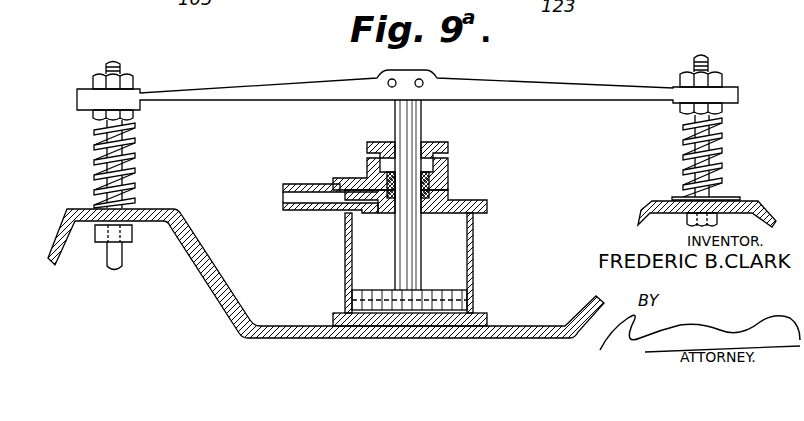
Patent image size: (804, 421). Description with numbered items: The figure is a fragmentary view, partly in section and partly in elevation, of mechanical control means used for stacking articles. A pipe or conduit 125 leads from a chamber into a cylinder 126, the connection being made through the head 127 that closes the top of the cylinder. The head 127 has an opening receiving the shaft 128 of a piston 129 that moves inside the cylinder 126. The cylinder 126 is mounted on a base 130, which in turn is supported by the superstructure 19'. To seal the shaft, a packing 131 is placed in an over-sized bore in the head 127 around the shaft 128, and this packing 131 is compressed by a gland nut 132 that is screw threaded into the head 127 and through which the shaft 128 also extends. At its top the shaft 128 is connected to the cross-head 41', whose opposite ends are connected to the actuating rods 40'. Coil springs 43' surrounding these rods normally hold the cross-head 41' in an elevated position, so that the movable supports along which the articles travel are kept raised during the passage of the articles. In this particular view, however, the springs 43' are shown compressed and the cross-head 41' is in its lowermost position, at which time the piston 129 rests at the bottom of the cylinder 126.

The cross-head 41' is at (407, 111).
The actuating rods 40' is at (416, 173).
The coil springs 43' is at (405, 161).
The superstructure 19' is at (412, 276).
The pipe or conduit 125 is at (310, 187).
The cylinder 126 is at (477, 248).
The head 127 is at (450, 195).
The shaft 128 is at (402, 243).
The piston 129 is at (350, 298).
The base 130 is at (485, 313).
The packing 131 is at (447, 173).
The gland nut 132 is at (435, 142).